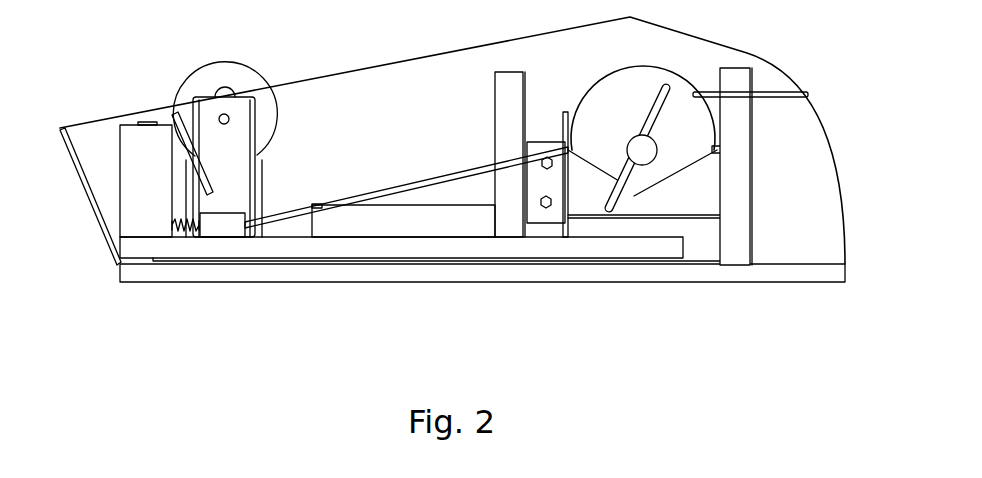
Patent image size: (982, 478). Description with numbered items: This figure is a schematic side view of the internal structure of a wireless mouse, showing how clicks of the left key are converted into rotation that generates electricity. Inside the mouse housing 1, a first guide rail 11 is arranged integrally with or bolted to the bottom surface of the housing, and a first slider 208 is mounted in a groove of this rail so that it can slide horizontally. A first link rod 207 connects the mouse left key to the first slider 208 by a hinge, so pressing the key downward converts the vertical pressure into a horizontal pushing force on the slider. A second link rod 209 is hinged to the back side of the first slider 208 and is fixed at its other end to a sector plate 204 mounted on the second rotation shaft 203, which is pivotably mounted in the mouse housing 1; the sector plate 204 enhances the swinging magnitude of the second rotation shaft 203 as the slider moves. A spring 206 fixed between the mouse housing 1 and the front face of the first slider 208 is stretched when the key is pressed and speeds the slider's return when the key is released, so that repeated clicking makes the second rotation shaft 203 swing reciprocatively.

The mouse housing 1 is at (377, 113).
The first guide rail 11 is at (520, 248).
The second rotation shaft 203 is at (643, 158).
The sector plate 204 is at (592, 138).
The spring 206 is at (177, 227).
The first link rod 207 is at (228, 218).
The first slider 208 is at (207, 195).
The second link rod 209 is at (412, 185).